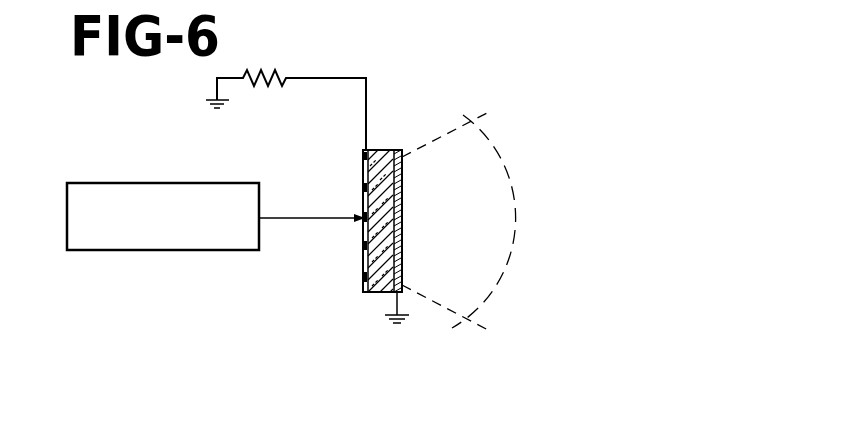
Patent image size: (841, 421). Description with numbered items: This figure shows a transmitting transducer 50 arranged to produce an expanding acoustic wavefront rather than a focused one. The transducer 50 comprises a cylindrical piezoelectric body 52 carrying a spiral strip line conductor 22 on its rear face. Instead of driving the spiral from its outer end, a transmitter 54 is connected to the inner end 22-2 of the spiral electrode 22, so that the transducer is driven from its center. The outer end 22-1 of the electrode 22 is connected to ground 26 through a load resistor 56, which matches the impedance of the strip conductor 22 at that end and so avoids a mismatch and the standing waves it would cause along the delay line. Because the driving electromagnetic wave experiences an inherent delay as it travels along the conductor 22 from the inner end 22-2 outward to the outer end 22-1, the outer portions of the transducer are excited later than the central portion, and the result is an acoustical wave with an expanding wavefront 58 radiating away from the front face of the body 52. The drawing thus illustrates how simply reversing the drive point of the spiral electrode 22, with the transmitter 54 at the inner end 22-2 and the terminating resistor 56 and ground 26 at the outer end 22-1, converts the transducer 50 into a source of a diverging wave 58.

The transducer 50 is at (382, 104).
The cylindrical body 52 is at (382, 148).
The strip line conductor 22 is at (364, 278).
The outer end of electrode 22-1 is at (363, 150).
The inner end of electrode 22-2 is at (364, 210).
The ground 26 is at (388, 321).
The transmitter 54 is at (120, 251).
The load resistor 56 is at (290, 77).
The expanding wavefront 58 is at (500, 161).